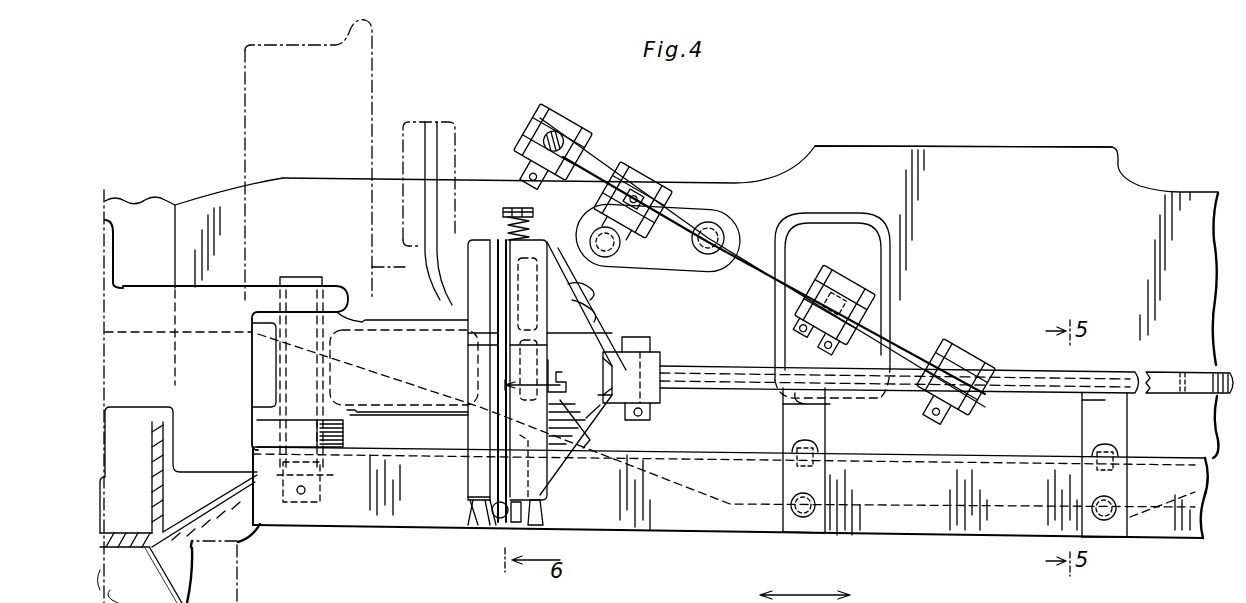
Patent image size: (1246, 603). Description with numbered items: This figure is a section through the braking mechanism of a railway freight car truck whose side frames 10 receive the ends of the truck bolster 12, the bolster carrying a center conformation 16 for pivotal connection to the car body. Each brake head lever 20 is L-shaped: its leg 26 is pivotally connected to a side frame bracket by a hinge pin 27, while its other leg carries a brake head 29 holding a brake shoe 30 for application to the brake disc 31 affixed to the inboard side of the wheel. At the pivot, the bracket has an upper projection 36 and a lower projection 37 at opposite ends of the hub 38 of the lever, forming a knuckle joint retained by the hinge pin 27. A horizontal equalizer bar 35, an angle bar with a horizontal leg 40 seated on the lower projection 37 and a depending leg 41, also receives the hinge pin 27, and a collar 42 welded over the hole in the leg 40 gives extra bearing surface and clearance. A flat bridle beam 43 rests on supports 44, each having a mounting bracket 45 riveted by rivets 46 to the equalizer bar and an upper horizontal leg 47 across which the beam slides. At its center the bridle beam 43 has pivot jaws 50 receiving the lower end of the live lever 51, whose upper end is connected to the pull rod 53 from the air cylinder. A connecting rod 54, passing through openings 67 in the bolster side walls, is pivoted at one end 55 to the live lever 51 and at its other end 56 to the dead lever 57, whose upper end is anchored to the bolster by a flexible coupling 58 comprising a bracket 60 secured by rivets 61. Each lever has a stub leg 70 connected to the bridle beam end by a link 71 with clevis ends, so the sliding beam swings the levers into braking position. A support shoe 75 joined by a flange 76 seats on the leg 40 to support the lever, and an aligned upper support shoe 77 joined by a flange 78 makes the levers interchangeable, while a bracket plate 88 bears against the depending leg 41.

The side frames 10 is at (112, 556).
The truck bolster 12 is at (1066, 145).
The center conformation 16 is at (933, 146).
The brake head lever 20 is at (398, 426).
The lever leg 26 is at (410, 322).
The hinge pin 27 is at (288, 275).
The brake head 29 is at (543, 493).
The brake shoe 30 is at (470, 484).
The brake disc 31 is at (455, 128).
The equalizer bar 35 is at (456, 521).
The upper projection 36 is at (335, 300).
The lower projection 37 is at (340, 470).
The hub 38 is at (268, 366).
The horizontal leg 40 is at (402, 458).
The depending leg 41 is at (690, 527).
The collar 42 is at (265, 428).
The bridle beam 43 is at (750, 393).
The support 44 is at (838, 450).
The mounting bracket 45 is at (792, 527).
The rivets 46 is at (798, 444).
The upper horizontal leg 47 is at (822, 405).
The pivot jaws 50 is at (940, 352).
The live lever 51 is at (598, 163).
The pull rod 53 is at (568, 110).
The connecting rod 54 is at (822, 270).
The connecting rod end 55 is at (793, 328).
The connecting rod end 56 is at (802, 346).
The dead lever 57 is at (742, 242).
The flexible coupling 58 is at (680, 185).
The bracket 60 is at (660, 266).
The rivets 61 is at (596, 230).
The openings 67 is at (865, 240).
The stub leg 70 is at (600, 350).
The link 71 is at (655, 352).
The support shoe 75 is at (580, 446).
The flange 76 is at (580, 420).
The upper support shoe 77 is at (578, 300).
The flange 78 is at (592, 310).
The bracket plate 88 is at (490, 526).